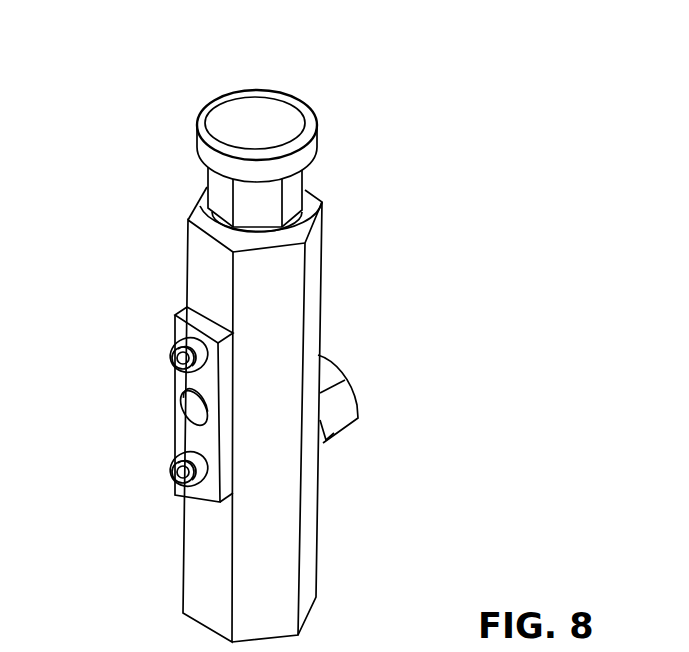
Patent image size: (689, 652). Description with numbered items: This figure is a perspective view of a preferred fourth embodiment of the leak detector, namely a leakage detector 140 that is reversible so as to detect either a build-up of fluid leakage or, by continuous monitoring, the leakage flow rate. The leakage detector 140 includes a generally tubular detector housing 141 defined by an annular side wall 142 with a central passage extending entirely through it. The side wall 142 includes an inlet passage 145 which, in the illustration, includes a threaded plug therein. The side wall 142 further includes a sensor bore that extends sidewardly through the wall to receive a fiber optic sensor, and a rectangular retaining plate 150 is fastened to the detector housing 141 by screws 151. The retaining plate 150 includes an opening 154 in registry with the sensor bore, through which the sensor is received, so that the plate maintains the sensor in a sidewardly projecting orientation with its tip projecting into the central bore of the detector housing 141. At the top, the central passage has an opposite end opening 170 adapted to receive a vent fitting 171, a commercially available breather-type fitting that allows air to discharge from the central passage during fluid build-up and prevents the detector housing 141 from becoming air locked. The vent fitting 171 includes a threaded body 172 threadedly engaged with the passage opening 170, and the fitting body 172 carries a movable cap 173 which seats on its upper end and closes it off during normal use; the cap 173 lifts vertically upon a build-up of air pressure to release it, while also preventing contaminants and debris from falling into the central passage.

The leakage detector 140 is at (437, 96).
The detector housing 141 is at (203, 270).
The annular side wall 142 is at (315, 275).
The inlet passage 145 is at (343, 407).
The retaining plate 150 is at (180, 435).
The screws 151 is at (175, 340).
The opening 154 is at (200, 407).
The end opening 170 is at (320, 202).
The vent fitting 171 is at (243, 91).
The threaded body 172 is at (300, 183).
The cap 173 is at (280, 115).